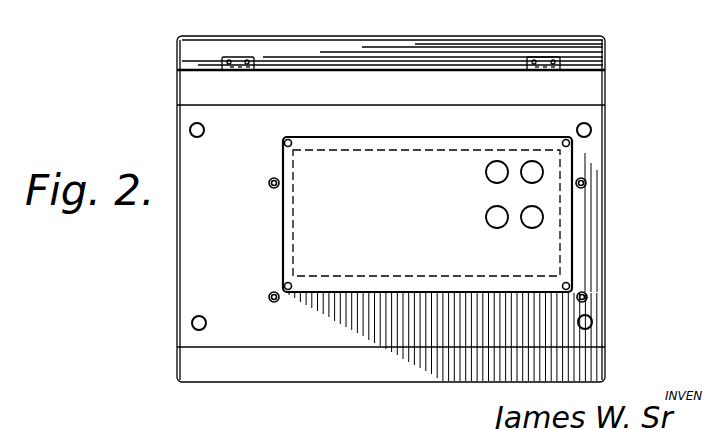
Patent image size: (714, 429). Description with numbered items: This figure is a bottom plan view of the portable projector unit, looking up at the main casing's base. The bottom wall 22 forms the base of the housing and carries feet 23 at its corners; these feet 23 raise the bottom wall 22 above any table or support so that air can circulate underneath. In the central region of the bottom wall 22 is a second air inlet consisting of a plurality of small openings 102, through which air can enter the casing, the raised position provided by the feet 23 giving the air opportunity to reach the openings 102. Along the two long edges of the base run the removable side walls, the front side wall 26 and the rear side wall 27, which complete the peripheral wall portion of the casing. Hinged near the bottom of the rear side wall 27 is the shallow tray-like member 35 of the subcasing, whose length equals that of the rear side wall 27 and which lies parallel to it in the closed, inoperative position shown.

The bottom wall 22 is at (190, 266).
The feet 23 is at (205, 129).
The front side wall 26 is at (376, 366).
The rear side wall 27 is at (582, 90).
The tray-like member 35 is at (523, 43).
The small openings 102 is at (495, 175).